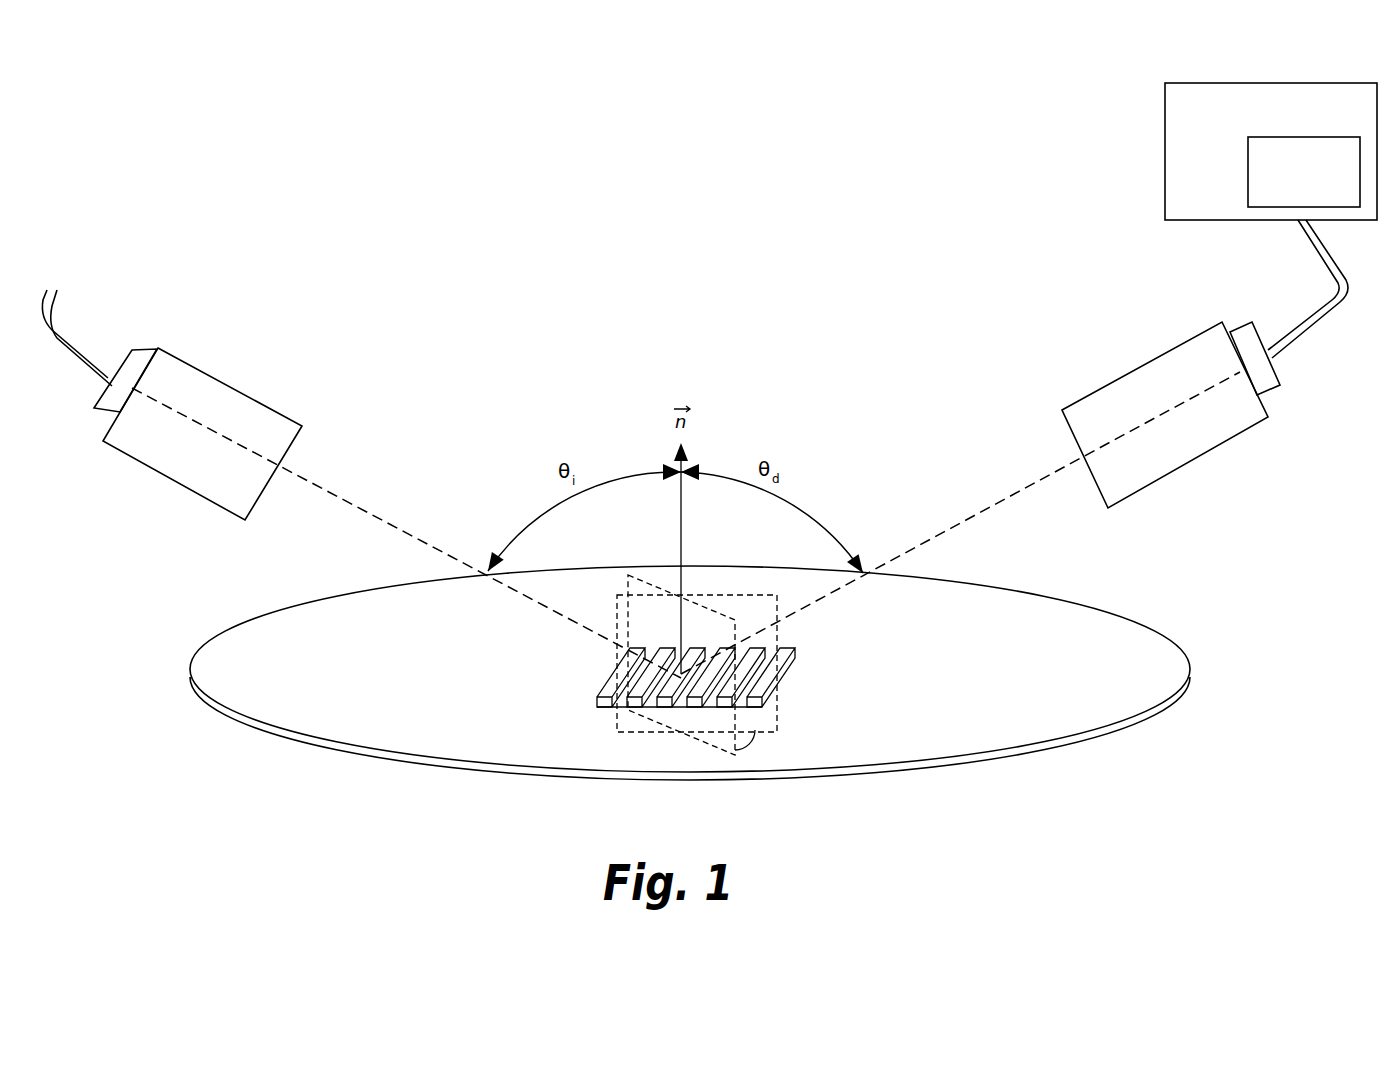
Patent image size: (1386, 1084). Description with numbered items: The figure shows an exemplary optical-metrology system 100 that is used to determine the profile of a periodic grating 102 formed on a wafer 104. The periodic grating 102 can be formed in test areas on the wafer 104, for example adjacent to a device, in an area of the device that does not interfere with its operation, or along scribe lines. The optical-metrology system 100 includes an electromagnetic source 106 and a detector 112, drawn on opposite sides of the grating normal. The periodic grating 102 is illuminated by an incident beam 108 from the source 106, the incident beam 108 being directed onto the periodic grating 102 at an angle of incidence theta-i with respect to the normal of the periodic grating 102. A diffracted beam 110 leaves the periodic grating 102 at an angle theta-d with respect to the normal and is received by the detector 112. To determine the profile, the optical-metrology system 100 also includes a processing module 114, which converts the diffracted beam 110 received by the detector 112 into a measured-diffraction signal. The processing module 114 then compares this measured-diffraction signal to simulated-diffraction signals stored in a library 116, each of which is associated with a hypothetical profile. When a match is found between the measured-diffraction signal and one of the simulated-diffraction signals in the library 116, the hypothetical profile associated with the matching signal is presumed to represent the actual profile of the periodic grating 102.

The optical-metrology system 100 is at (242, 171).
The periodic grating 102 is at (596, 726).
The wafer 104 is at (273, 615).
The electromagnetic source 106 is at (205, 373).
The incident beam 108 is at (317, 487).
The diffracted beam 110 is at (983, 510).
The detector 112 is at (1275, 417).
The processing module 114 is at (1226, 126).
The library 116 is at (1321, 188).